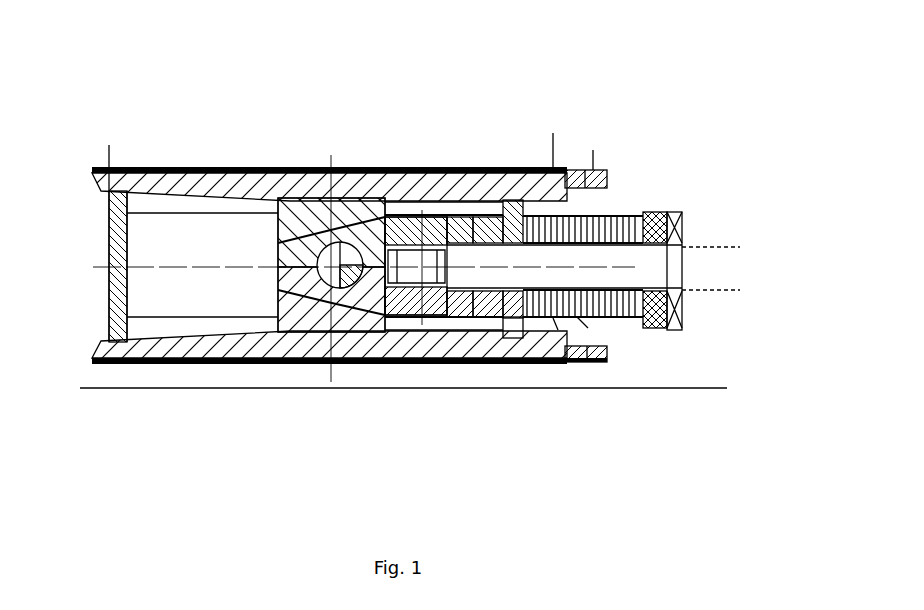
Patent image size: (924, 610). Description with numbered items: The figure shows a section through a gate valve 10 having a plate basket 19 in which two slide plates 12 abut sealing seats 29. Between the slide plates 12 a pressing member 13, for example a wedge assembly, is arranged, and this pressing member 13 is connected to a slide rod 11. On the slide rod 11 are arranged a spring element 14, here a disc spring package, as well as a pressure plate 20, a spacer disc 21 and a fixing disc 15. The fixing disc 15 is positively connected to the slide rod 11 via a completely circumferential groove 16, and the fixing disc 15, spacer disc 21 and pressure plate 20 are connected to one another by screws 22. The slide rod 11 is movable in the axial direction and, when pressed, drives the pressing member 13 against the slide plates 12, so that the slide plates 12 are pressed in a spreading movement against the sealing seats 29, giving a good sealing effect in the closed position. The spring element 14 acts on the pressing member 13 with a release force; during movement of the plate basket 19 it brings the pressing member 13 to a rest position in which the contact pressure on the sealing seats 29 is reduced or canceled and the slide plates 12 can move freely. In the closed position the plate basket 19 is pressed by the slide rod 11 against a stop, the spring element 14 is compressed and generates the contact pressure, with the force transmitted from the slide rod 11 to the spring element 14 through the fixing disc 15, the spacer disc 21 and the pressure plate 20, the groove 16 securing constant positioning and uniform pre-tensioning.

The gate valve 10 is at (195, 57).
The slide rod 11 is at (600, 277).
The slide plates 12 is at (305, 186).
The pressing member 13 is at (293, 250).
The spring element 14 is at (597, 315).
The fixing disc 15 is at (680, 300).
The groove 16 is at (675, 268).
The plate basket 19 is at (607, 177).
The pressure plate 20 is at (663, 210).
The spacer disc 21 is at (690, 228).
The screws 22 is at (672, 313).
The sealing seats 29 is at (567, 165).